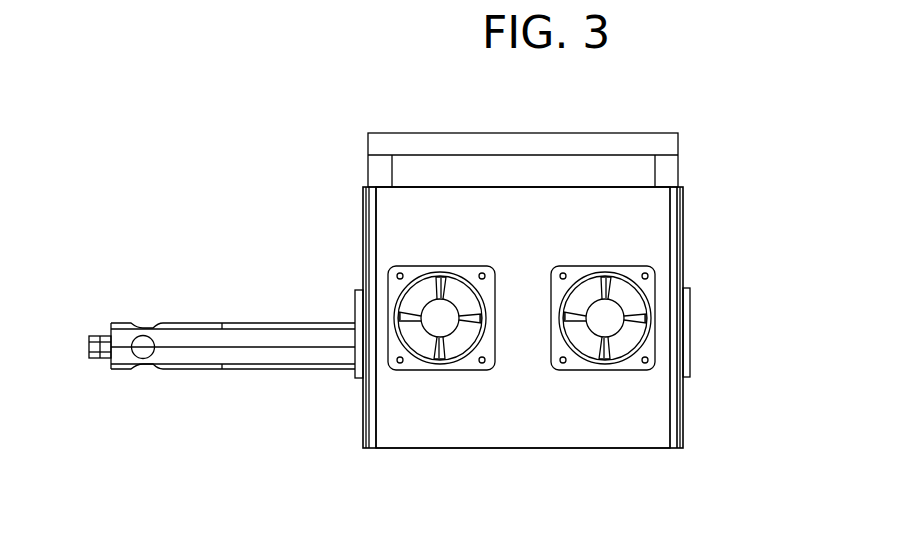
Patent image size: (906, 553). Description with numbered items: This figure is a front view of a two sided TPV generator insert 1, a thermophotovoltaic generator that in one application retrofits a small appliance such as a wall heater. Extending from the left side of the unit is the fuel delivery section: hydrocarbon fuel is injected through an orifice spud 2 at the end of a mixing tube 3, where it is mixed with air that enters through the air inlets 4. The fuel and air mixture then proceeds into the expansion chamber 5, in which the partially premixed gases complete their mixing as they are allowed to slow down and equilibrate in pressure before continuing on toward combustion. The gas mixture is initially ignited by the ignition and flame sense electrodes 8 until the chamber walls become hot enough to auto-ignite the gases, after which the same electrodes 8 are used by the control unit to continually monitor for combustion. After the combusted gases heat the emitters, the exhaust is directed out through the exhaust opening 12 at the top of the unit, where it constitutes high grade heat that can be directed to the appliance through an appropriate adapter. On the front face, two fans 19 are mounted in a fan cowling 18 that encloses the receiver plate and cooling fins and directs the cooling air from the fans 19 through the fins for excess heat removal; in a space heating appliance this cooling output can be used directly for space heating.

The two sided TPV generator insert 1 is at (168, 125).
The orifice spud 2 is at (100, 343).
The mixing tube 3 is at (233, 340).
The air inlets 4 is at (142, 336).
The expansion chamber 5 is at (687, 333).
The ignition and flame sense electrodes 8 is at (683, 225).
The exhaust opening 12 is at (558, 134).
The fan cowling 18 is at (420, 427).
The fans 19 is at (457, 340).